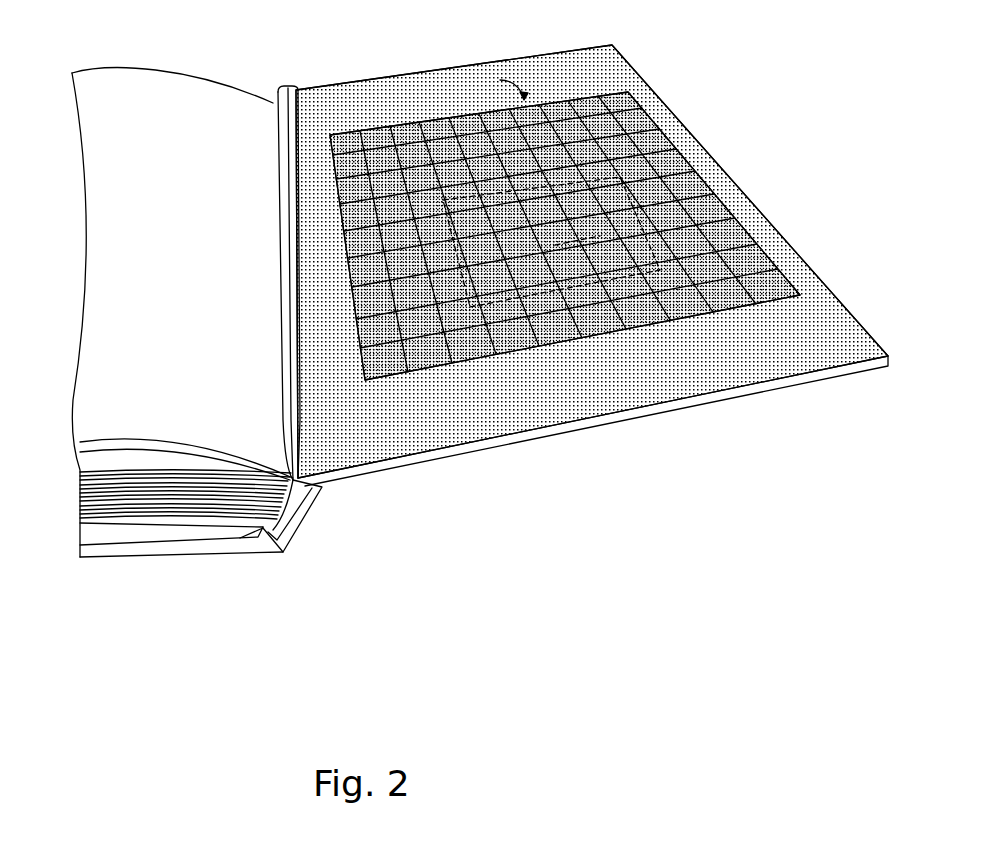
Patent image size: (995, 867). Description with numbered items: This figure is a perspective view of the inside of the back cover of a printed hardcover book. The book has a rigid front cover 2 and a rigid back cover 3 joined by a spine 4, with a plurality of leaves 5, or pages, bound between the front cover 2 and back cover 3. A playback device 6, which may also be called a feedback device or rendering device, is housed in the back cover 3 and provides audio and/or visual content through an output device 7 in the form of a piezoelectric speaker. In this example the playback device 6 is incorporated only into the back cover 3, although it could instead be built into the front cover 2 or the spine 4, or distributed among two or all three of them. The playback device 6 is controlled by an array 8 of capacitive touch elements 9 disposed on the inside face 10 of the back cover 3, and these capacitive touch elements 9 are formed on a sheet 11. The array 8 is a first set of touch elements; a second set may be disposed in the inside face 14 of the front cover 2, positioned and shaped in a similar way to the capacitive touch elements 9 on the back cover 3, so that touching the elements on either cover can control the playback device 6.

The front cover 2 is at (116, 555).
The back cover 3 is at (813, 378).
The spine 4 is at (300, 523).
The leaves 5 is at (82, 500).
The playback device 6 is at (650, 232).
The output device 7 is at (640, 262).
The array of capacitive touch elements 8 is at (503, 90).
The capacitive touch elements 9 is at (647, 93).
The inside face 10 is at (290, 103).
The sheet 11 is at (860, 333).
The inside face 14 is at (93, 533).